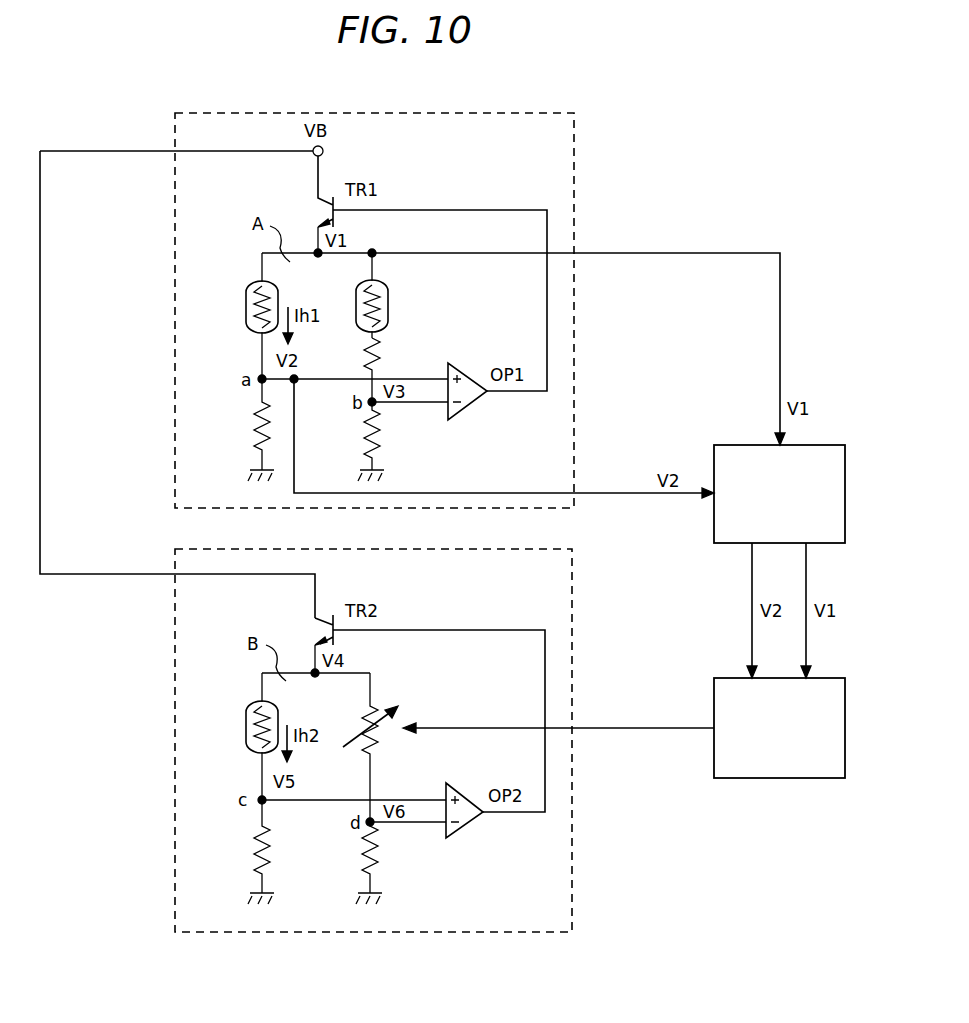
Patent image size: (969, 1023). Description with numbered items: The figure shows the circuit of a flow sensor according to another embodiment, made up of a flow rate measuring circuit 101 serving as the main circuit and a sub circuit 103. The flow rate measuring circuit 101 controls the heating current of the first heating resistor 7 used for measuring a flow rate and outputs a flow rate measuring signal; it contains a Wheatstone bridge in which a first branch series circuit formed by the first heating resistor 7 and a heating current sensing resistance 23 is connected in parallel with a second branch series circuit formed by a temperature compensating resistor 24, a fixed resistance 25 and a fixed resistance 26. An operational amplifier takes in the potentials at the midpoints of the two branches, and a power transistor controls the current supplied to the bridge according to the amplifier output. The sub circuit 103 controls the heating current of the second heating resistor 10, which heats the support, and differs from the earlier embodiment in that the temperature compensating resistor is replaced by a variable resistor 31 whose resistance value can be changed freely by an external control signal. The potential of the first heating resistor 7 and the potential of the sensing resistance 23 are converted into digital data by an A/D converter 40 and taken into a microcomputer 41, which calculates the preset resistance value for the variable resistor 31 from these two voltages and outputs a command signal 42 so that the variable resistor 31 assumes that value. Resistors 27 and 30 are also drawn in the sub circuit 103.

The first heating resistor 7 is at (244, 306).
The second heating resistor 10 is at (248, 726).
The heating current sensing resistance 23 is at (248, 427).
The temperature compensating resistor 24 is at (390, 303).
The fixed resistance 25 is at (380, 362).
The fixed resistance 26 is at (378, 432).
The resistor 27 is at (248, 849).
The resistor 30 is at (376, 850).
The variable resistor 31 is at (382, 703).
The A/D converter 40 is at (826, 445).
The microcomputer 41 is at (826, 678).
The command signal 42 is at (619, 728).
The flow rate measuring circuit 101 is at (580, 174).
The sub circuit 103 is at (576, 612).